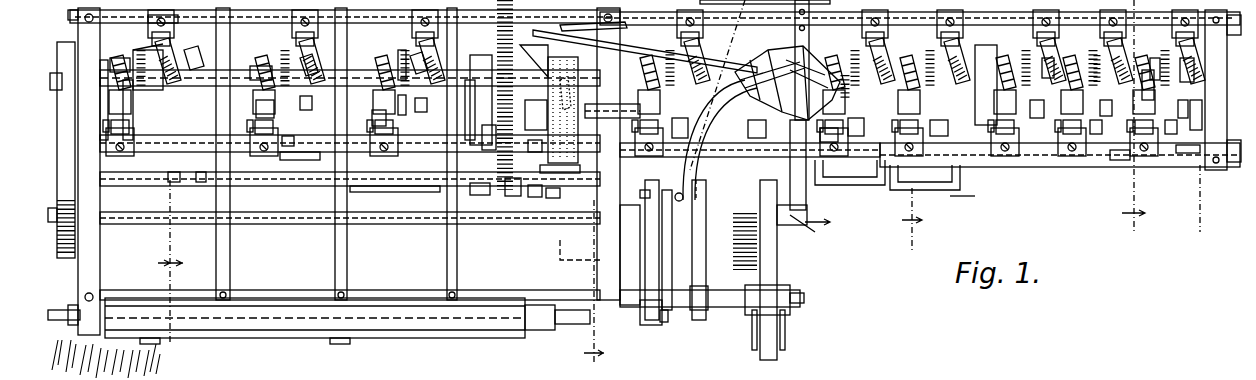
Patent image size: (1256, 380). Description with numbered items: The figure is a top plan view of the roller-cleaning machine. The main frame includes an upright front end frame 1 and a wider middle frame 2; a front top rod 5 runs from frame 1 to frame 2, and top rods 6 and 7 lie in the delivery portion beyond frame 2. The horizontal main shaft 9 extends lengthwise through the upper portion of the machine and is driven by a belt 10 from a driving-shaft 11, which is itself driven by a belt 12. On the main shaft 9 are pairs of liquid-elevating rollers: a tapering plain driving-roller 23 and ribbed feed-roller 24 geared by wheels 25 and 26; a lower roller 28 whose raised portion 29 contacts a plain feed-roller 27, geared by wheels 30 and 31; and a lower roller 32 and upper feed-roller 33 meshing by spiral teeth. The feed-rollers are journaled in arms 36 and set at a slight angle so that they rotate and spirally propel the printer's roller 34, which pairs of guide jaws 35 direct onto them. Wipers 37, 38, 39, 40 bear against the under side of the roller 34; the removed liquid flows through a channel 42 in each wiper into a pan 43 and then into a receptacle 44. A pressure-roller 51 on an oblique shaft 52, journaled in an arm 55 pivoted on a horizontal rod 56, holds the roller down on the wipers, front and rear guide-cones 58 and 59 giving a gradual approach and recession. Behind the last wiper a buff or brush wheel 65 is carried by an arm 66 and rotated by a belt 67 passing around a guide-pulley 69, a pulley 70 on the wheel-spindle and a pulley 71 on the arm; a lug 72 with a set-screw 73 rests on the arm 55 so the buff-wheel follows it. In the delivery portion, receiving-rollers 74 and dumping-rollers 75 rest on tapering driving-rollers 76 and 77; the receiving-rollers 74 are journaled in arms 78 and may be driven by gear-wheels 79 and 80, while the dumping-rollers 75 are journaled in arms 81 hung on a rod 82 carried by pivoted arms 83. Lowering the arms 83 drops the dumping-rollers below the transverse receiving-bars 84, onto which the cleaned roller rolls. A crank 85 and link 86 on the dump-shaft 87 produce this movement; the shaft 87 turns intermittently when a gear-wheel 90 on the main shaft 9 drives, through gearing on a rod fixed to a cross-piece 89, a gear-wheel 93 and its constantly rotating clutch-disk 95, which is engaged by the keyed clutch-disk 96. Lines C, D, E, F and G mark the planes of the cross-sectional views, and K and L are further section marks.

The front end frame 1 is at (1223, 95).
The middle frame 2 is at (608, 154).
The longitudinal top rod 5 is at (1047, 166).
The longitudinal top rod 6 is at (350, 187).
The longitudinal top rod 7 is at (549, 300).
The main shaft 9 is at (352, 78).
The belt 10 is at (61, 150).
The driving-shaft 11 is at (350, 225).
The belt 12 is at (770, 360).
The tapering driving-roller 23 is at (1171, 89).
The ribbed feed-roller 24 is at (1182, 60).
The gear-wheel 25 is at (1186, 152).
The gear-wheel 26 is at (1146, 59).
The plain-faced feed-roller 27 is at (1052, 60).
The lower driving-roller 28 is at (1045, 116).
The raised portion 29 is at (1114, 112).
The gear-wheel 30 is at (1104, 130).
The gear-wheel 31 is at (1096, 62).
The lower driving-roller 32 is at (842, 74).
The upper feed-roller 33 is at (834, 136).
The printer's roller 34 is at (319, 321).
The guide jaws 35 is at (986, 80).
The arms 36 is at (1122, 160).
The wiper 37 is at (945, 121).
The wiper 38 is at (860, 112).
The wiper 39 is at (761, 120).
The wiper 40 is at (686, 119).
The depressed channel 42 is at (964, 6).
The pan 43 is at (942, 180).
The receptacle 44 is at (942, 190).
The pressure-roller 51 is at (808, 50).
The oblique shaft 52 is at (662, 60).
The arm 55 is at (720, 100).
The horizontal rod 56 is at (720, 308).
The front guide-cone 58 is at (787, 83).
The rear guide-cone 59 is at (767, 80).
The buff or brush wheel 65 is at (563, 110).
The arm 66 is at (620, 231).
The belt 67 is at (652, 326).
The guide-pulley 69 is at (660, 320).
The pulley 70 is at (614, 111).
The pulley 71 is at (660, 246).
The lug 72 is at (649, 197).
The set-screw 73 is at (672, 197).
The receiving-rollers 74 is at (186, 50).
The dumping-rollers 75 is at (272, 116).
The tapering driving-roller 76 is at (371, 108).
The tapering driving-roller 77 is at (262, 66).
The arms 78 is at (178, 16).
The gear-wheel 79 is at (408, 108).
The gear-wheel 80 is at (398, 63).
The arms 81 is at (290, 138).
The rod 82 is at (290, 152).
The arms 83 is at (128, 114).
The receiving-bars 84 is at (462, 272).
The crank 85 is at (201, 182).
The link 86 is at (174, 182).
The dump-shaft 87 is at (395, 178).
The cross-piece 89 is at (478, 188).
The gear-wheel 90 is at (497, 75).
The gear-wheel 93 is at (506, 190).
The clutch-disk 95 is at (538, 197).
The clutch-disk 96 is at (481, 104).
The section line C C is at (1133, 118).
The section line D D is at (912, 220).
The section line E E is at (696, 192).
The section line F F is at (810, 229).
The section line G G is at (594, 288).
The section line K is at (170, 266).
The section line L is at (1197, 201).